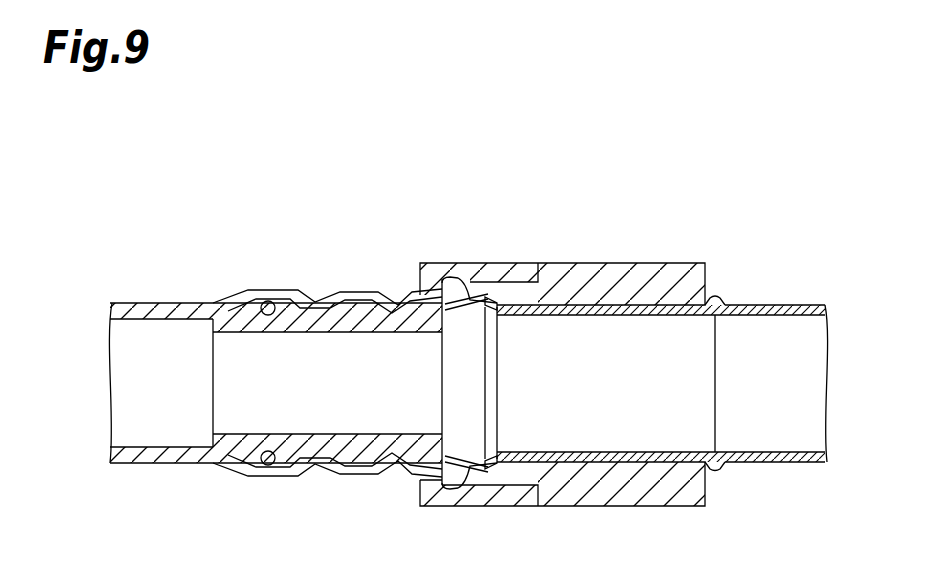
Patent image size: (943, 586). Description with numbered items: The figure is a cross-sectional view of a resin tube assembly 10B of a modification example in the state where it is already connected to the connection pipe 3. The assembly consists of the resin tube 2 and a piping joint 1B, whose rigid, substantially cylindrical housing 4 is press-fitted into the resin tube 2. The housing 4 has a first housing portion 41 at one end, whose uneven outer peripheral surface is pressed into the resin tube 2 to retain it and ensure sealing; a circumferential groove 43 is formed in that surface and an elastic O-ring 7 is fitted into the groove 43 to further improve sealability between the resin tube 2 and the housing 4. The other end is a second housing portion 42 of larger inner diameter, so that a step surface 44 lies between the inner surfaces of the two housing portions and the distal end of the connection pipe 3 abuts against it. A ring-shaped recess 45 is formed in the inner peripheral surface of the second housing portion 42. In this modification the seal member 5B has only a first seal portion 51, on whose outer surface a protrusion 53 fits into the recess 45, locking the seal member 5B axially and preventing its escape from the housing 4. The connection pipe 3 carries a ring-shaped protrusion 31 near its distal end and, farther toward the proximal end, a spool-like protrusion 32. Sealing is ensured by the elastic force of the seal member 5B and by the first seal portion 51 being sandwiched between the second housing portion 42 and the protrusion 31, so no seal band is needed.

The resin tube assembly 10B is at (318, 232).
The resin tube 2 is at (158, 303).
The connection pipe 3 is at (768, 305).
The housing 4 is at (427, 263).
The first housing portion 41 is at (354, 290).
The second housing portion 42 is at (502, 263).
The circumferential groove 43 is at (270, 300).
The step surface 44 is at (444, 442).
The recess 45 is at (498, 323).
The protrusion 53 is at (454, 270).
The piping joint 1B is at (533, 259).
The seal member 5B is at (614, 488).
The protrusion 31 is at (486, 492).
The first seal portion 51 is at (526, 490).
The protrusion 32 is at (722, 470).
The O-ring 7 is at (270, 470).